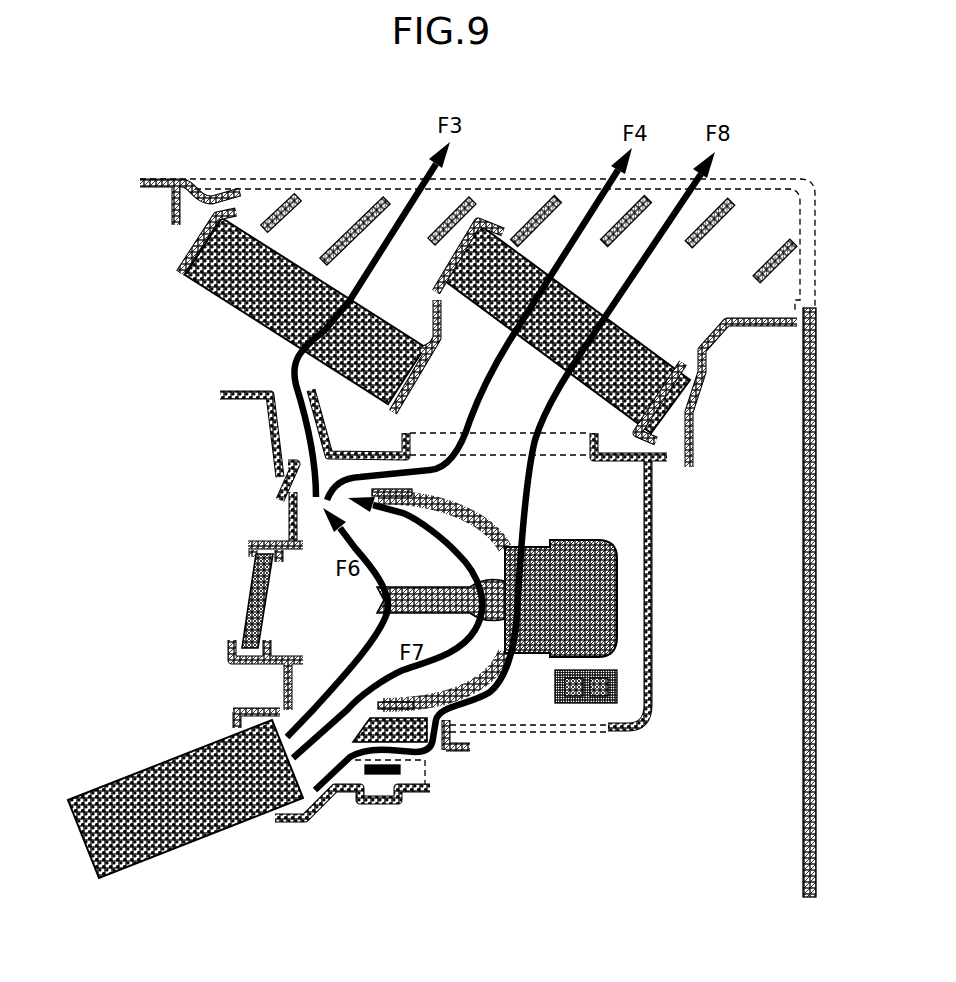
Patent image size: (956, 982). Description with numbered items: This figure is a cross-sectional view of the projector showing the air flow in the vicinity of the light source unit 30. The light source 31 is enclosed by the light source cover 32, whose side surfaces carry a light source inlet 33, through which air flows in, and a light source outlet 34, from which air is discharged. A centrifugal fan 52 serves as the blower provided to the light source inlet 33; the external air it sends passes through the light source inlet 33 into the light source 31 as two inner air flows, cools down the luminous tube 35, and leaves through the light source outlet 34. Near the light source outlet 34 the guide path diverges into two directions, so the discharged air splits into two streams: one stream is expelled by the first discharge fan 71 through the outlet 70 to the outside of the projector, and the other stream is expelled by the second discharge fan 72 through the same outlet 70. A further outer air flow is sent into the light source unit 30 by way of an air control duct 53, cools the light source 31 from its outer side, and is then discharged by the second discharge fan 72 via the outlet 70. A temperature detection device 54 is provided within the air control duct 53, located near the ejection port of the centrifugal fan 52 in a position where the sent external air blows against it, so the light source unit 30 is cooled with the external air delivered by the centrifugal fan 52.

The light source unit 30 is at (650, 531).
The light source 31 is at (620, 598).
The light source cover 32 is at (250, 541).
The light source inlet 33 is at (367, 690).
The light source outlet 34 is at (360, 512).
The luminous tube 35 is at (377, 597).
The centrifugal fan 52 is at (170, 783).
The air control duct 53 is at (440, 752).
The temperature detection device 54 is at (352, 793).
The outlet 70 is at (334, 177).
The first discharge fan 71 is at (243, 247).
The second discharge fan 72 is at (645, 393).